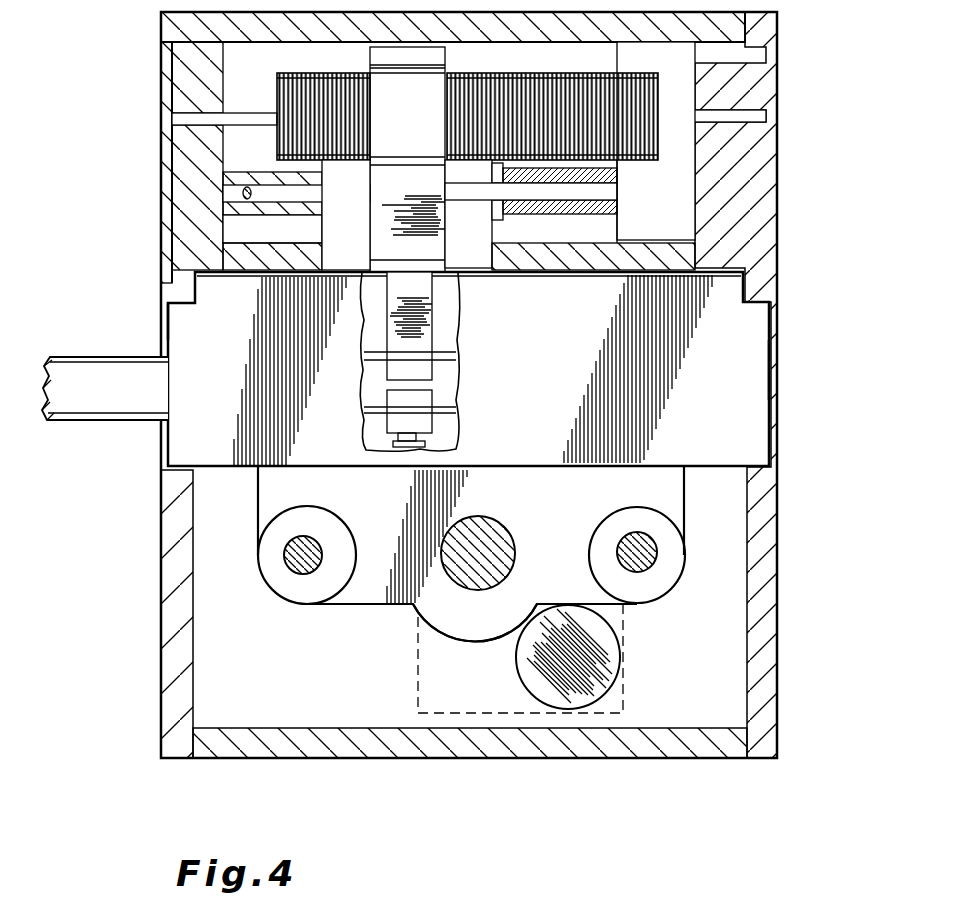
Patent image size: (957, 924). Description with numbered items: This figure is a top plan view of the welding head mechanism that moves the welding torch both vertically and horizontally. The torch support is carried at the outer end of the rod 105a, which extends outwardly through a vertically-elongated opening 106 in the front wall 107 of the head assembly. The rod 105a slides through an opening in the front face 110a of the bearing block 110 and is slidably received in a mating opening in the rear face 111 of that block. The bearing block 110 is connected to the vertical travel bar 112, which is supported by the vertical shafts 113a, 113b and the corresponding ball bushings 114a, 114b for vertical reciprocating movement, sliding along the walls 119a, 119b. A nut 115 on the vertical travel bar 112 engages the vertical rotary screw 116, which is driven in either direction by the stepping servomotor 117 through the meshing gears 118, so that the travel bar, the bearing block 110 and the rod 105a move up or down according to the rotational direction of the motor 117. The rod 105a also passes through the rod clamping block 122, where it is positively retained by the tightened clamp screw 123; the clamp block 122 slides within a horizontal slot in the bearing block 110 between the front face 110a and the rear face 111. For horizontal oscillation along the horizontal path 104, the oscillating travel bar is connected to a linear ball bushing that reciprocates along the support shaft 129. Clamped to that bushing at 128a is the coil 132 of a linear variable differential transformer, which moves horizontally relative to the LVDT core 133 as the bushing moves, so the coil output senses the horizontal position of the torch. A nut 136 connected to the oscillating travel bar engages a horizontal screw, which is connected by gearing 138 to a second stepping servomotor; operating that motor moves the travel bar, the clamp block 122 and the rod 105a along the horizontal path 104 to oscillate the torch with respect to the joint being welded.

The horizontal path 104 is at (432, 118).
The rod 105a is at (117, 372).
The vertically-elongated opening 106 is at (158, 452).
The front wall 107 is at (158, 598).
The bearing block 110 is at (535, 348).
The front face of bearing block 110a is at (168, 323).
The rear face of bearing block 111 is at (771, 372).
The vertical travel bar 112 is at (361, 612).
The vertical shaft 113a is at (323, 545).
The vertical shaft 113b is at (630, 535).
The ball bushing 114a is at (283, 600).
The ball bushing 114b is at (675, 588).
The nut 115 is at (482, 642).
The vertical rotary screw 116 is at (512, 540).
The stepping servomotor 117 is at (603, 652).
The meshing gears 118 is at (458, 695).
The wall 119a is at (198, 293).
The wall 119b is at (742, 290).
The rod clamping block 122 is at (418, 292).
The clamp screw 123 is at (425, 445).
The clamp point on ball bushing 128a is at (383, 78).
The support shaft 129 is at (473, 193).
The LVDT coil 132 is at (548, 75).
The LVDT core 133 is at (676, 113).
The nut 136 is at (585, 215).
The gearing 138 is at (743, 182).